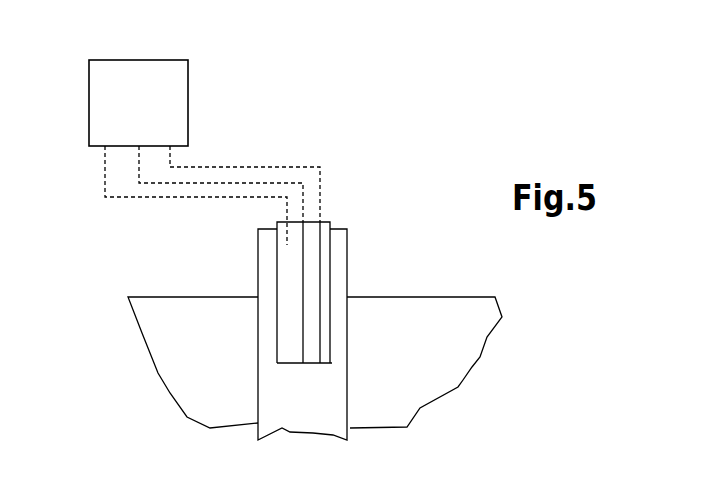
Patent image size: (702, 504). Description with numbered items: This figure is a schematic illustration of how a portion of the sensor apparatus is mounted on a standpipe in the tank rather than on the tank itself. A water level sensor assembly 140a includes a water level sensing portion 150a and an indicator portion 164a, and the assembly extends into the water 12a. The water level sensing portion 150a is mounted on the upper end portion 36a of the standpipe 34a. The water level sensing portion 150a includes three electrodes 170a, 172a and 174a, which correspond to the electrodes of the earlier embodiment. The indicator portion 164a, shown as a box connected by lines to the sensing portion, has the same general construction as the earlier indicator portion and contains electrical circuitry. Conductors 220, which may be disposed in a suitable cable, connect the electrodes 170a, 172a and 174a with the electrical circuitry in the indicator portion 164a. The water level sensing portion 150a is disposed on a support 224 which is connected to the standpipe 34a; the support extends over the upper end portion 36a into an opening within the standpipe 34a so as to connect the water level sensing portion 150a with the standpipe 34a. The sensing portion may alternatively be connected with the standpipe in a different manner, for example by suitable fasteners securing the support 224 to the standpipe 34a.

The indicator portion 164a is at (163, 59).
The conductors 220 is at (224, 152).
The water level sensor assembly 140a is at (300, 145).
The electrode 174a is at (288, 241).
The upper end portion 36a is at (340, 235).
The electrode 170a is at (321, 259).
The electrode 172a is at (303, 281).
The water level sensing portion 150a is at (332, 286).
The support 224 is at (285, 332).
The water 12a is at (207, 378).
The standpipe 34a is at (278, 391).